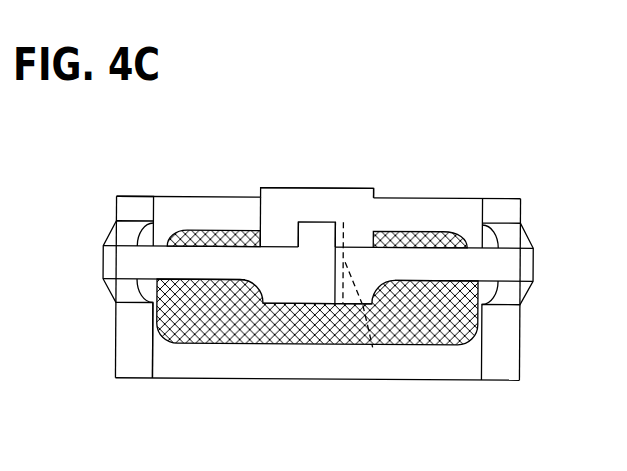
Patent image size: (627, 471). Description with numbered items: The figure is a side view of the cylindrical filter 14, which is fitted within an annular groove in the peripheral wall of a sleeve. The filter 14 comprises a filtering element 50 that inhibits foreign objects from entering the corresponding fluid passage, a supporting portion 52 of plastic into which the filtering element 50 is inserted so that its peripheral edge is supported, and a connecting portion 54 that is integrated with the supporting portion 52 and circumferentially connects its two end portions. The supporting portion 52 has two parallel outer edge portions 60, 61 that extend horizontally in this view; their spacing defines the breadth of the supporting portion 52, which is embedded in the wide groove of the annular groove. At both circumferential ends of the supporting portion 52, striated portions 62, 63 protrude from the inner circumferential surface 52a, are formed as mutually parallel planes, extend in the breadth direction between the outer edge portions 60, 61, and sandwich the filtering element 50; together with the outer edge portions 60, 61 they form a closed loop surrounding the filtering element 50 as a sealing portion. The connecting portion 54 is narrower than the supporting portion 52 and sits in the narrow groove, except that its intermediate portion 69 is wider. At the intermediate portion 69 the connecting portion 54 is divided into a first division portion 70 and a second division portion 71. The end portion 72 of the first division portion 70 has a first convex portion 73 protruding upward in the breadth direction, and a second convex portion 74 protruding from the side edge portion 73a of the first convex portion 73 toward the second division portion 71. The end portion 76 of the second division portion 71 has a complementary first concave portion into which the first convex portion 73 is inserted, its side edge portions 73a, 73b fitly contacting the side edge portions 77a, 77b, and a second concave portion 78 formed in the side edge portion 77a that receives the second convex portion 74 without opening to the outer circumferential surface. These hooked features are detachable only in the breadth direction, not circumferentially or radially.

The filter 14 is at (110, 383).
The filtering element 50 is at (438, 346).
The supporting portion 52 is at (203, 207).
The inner circumferential surface 52a is at (180, 362).
The connecting portion 54 is at (118, 263).
The outer edge portion 60 is at (425, 197).
The outer edge portion 61 is at (217, 381).
The striated portion 62 is at (165, 198).
The striated portion 63 is at (480, 212).
The intermediate portion 69 is at (377, 184).
The first division portion 70 is at (146, 243).
The second division portion 71 is at (492, 312).
The end portion 72 is at (275, 288).
The first convex portion 73 is at (299, 222).
The side edge portion 73a is at (338, 220).
The side edge portion 73b is at (291, 226).
The second convex portion 74 is at (346, 249).
The end portion 76 is at (346, 206).
The side edge portion 77a is at (328, 255).
The side edge portion 77b is at (303, 255).
The second concave portion 78 is at (373, 347).